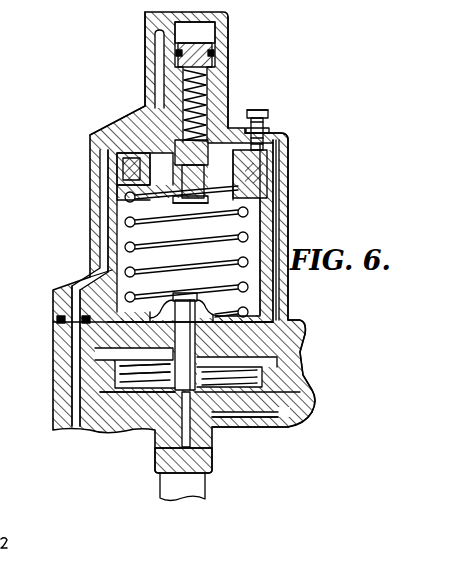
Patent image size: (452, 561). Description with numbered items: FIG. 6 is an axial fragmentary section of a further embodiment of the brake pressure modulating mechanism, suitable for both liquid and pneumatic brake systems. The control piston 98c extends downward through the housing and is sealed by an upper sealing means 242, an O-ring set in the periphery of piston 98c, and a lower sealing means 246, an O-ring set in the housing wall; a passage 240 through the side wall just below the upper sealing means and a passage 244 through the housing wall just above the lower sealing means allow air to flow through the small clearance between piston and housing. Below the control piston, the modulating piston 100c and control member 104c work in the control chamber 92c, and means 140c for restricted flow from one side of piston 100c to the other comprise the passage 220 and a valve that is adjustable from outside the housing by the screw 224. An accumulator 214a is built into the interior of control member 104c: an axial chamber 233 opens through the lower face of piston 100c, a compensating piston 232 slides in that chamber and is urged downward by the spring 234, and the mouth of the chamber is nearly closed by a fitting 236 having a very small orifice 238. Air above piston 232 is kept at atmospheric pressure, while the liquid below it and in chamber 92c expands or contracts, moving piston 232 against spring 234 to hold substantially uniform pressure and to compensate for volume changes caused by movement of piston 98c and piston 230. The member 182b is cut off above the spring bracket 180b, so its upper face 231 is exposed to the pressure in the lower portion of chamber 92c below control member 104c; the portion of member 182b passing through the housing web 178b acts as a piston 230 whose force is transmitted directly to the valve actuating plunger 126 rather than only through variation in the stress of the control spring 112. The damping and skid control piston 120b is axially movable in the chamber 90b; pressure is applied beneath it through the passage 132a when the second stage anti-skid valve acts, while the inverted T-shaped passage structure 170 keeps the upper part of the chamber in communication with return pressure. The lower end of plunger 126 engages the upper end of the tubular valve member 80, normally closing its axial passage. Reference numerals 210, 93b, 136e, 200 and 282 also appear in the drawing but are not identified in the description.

The plug 210 is at (207, 33).
The upper sealing means 242 is at (212, 57).
The passage 240 is at (226, 125).
The control piston 98c is at (203, 110).
The accumulator 214a is at (186, 97).
The spring 234 is at (196, 124).
The bolt 93b is at (240, 121).
The screw 224 is at (275, 114).
The restricted flow means 140c is at (293, 133).
The gap 282 is at (282, 140).
The passage to the atmosphere 244 is at (222, 163).
The lower sealing means 246 is at (284, 196).
The passage 220 is at (264, 203).
The coil spring 112 is at (260, 241).
The seal 136e is at (117, 166).
The modulating piston 100c is at (120, 190).
The control member 104c is at (120, 208).
The axial chamber 233 is at (188, 188).
The compensating piston 232 is at (199, 190).
The fitting 236 is at (190, 204).
The orifice 238 is at (194, 205).
The upper face 231 is at (184, 294).
The control chamber 92c is at (252, 280).
The spring bracket 180b is at (198, 300).
The housing web 178b is at (277, 340).
The body 200 is at (216, 354).
The piston 230 is at (115, 353).
The damping and skid control piston 120b is at (308, 386).
The member 182b is at (173, 365).
The inverted T-shaped passage structure 170 is at (212, 428).
The chamber 90b is at (250, 424).
The passage 132a is at (298, 422).
The valve actuating plunger 126 is at (211, 465).
The tubular valve member 80 is at (208, 487).